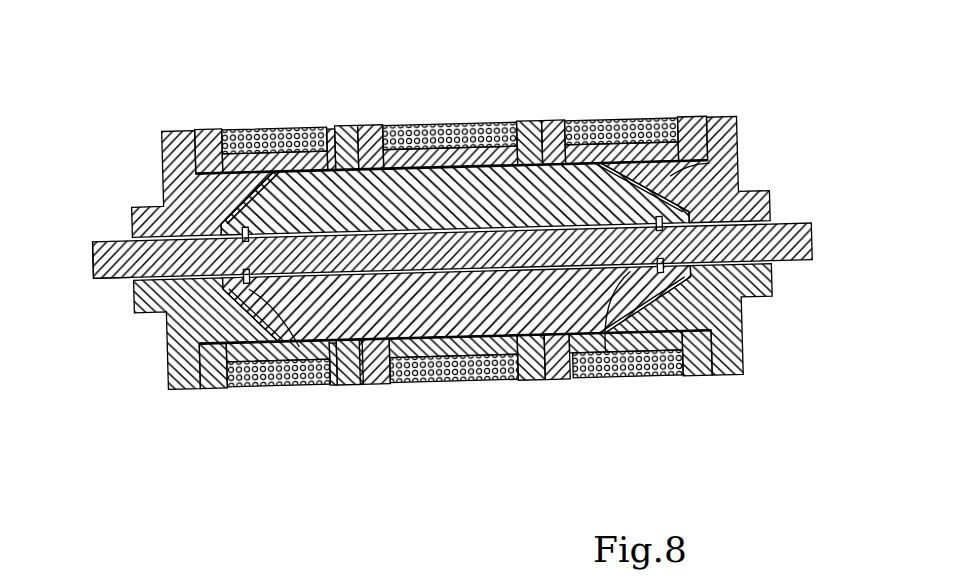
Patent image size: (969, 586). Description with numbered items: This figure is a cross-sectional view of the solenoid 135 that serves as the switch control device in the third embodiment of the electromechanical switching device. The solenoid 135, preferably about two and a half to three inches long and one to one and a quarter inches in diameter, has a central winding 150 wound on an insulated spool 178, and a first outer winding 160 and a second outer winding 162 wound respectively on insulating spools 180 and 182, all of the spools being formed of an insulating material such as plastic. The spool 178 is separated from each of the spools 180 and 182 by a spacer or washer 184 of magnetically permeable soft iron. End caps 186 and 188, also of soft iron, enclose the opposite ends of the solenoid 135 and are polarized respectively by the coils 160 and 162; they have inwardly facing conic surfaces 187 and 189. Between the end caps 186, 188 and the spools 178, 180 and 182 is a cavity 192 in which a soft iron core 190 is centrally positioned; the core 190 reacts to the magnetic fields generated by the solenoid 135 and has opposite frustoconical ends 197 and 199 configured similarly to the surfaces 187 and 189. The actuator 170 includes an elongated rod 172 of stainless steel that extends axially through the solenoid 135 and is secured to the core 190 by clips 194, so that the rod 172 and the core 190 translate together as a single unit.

The solenoid 135 is at (720, 80).
The central winding 150 is at (455, 125).
The first outer winding 160 is at (238, 128).
The second outer winding 162 is at (612, 122).
The actuator 170 is at (778, 232).
The elongated rod 172 is at (125, 285).
The insulated spool 178 is at (368, 125).
The insulating spool 180 is at (195, 128).
The insulating spool 182 is at (572, 122).
The spacer or washer 184 is at (350, 385).
The end cap 186 is at (185, 340).
The conic surface 187 is at (218, 230).
The end cap 188 is at (740, 326).
The conic surface 189 is at (740, 200).
The core 190 is at (453, 325).
The cavity 192 is at (648, 375).
The clips 194 is at (308, 372).
The frustoconical end 197 is at (278, 172).
The frustoconical end 199 is at (735, 176).